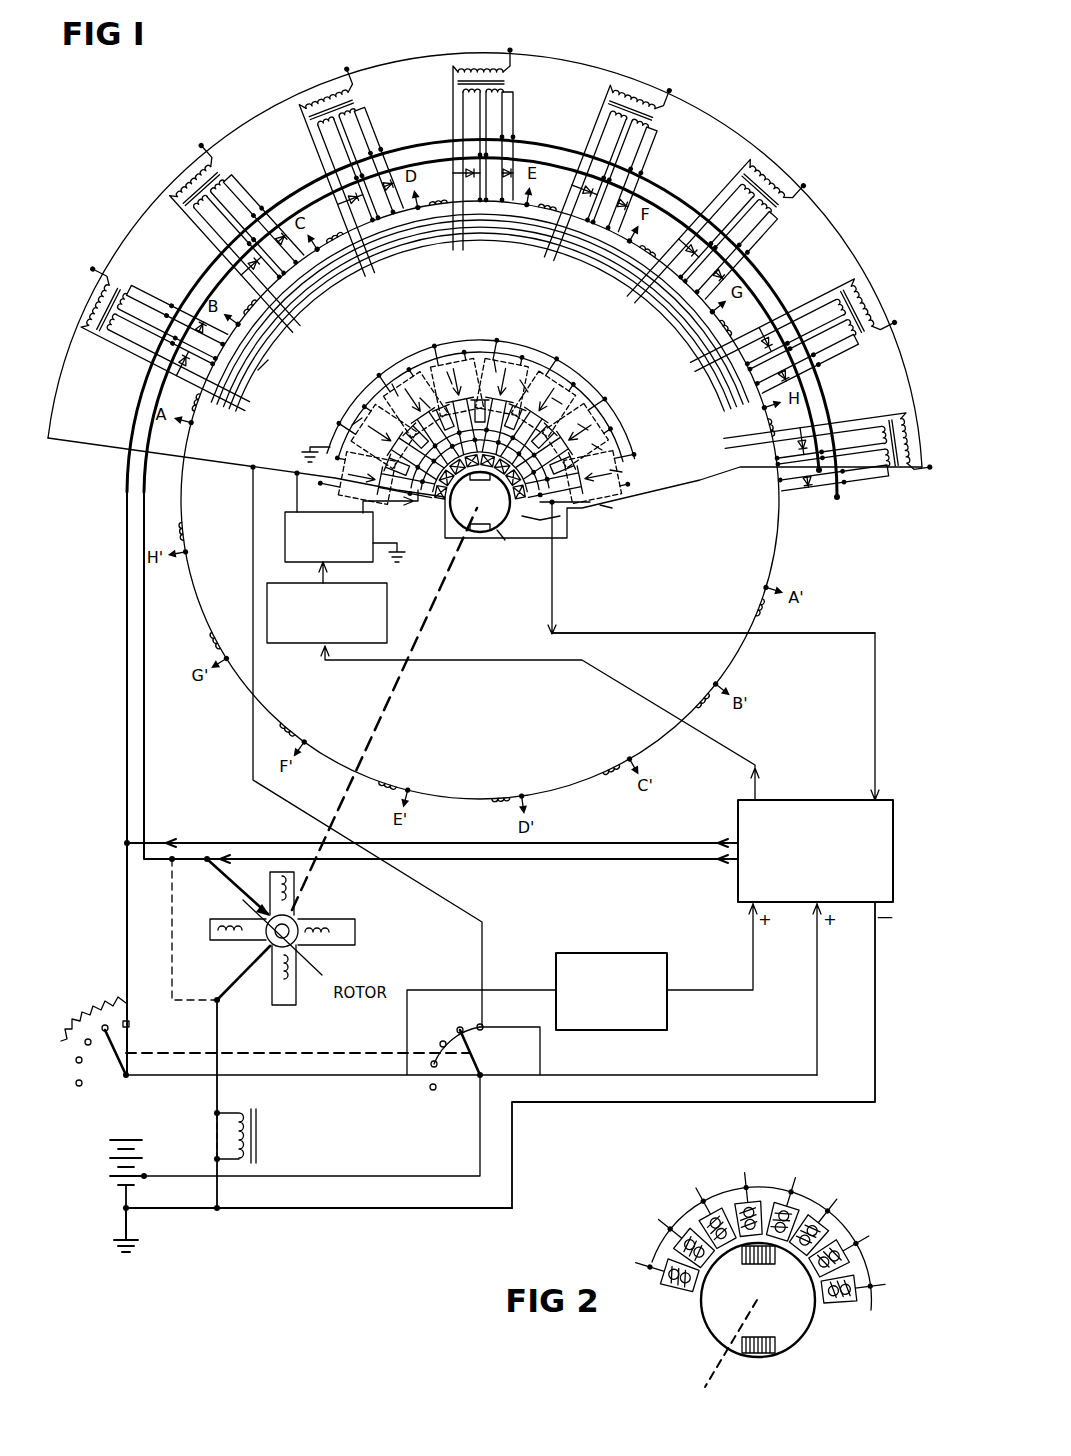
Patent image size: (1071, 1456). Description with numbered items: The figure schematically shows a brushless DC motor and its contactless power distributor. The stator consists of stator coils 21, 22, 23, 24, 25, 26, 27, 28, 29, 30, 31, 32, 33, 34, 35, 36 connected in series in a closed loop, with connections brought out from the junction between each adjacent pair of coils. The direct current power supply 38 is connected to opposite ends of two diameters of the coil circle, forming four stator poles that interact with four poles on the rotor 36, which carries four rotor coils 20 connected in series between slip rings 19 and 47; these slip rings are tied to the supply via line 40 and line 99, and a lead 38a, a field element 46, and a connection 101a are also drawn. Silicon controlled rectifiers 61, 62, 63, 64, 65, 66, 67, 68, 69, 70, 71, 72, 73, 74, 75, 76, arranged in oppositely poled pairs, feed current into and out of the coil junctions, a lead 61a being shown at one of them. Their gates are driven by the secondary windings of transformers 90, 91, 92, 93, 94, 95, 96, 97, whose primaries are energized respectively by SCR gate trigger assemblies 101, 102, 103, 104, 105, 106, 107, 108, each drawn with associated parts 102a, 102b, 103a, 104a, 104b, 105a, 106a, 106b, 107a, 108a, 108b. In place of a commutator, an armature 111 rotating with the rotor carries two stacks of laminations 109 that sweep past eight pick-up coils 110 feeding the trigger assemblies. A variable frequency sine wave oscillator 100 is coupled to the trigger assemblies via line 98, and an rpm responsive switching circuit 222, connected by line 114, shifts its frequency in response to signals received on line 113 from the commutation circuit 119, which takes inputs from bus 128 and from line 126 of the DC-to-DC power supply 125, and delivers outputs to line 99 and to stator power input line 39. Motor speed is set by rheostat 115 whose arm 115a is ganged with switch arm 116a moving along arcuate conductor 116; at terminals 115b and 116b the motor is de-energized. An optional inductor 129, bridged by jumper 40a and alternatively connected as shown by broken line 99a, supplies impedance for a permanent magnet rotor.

In FIG. 1, the slip ring 19 is at (296, 920).
In FIG. 1, the rotor coil 20 is at (335, 927).
In FIG. 1, the stator coil 21 is at (212, 411).
In FIG. 1, the stator coil 22 is at (264, 318).
In FIG. 1, the stator coil 23 is at (345, 252).
In FIG. 1, the stator coil 24 is at (438, 212).
In FIG. 1, the stator coil 25 is at (545, 215).
In FIG. 1, the stator coil 26 is at (642, 260).
In FIG. 1, the stator coil 27 is at (716, 338).
In FIG. 1, the stator coil 28 is at (757, 425).
In FIG. 1, the stator coil 29 is at (745, 599).
In FIG. 1, the stator coil 30 is at (692, 686).
In FIG. 1, the stator coil 31 is at (614, 752).
In FIG. 1, the stator coil 32 is at (503, 781).
In FIG. 1, the stator coil 33 is at (398, 773).
In FIG. 1, the stator coil 34 is at (301, 723).
In FIG. 1, the stator coil 35 is at (223, 626).
In FIG. 1, the rotor 36 is at (282, 763).
In FIG. 1, the direct current power supply 38 is at (108, 1172).
In FIG. 1, the battery lead 38a is at (196, 1078).
In FIG. 1, the stator power input line 39 is at (122, 812).
In FIG. 1, the line 40 is at (220, 1093).
In FIG. 1, the jumper 40a is at (212, 1132).
In FIG. 1, the rotor field winding 46 is at (252, 944).
In FIG. 1, the slip ring 47 is at (305, 958).
In FIG. 1, the silicon controlled rectifier 61 is at (192, 362).
In FIG. 1, the diode lead 61a is at (258, 372).
In FIG. 1, the silicon controlled rectifier 62 is at (207, 338).
In FIG. 1, the silicon controlled rectifier 63 is at (235, 268).
In FIG. 1, the silicon controlled rectifier 64 is at (284, 214).
In FIG. 1, the silicon controlled rectifier 65 is at (332, 188).
In FIG. 1, the silicon controlled rectifier 66 is at (382, 185).
In FIG. 1, the silicon controlled rectifier 67 is at (458, 172).
In FIG. 1, the silicon controlled rectifier 68 is at (502, 170).
In FIG. 1, the silicon controlled rectifier 69 is at (568, 175).
In FIG. 1, the silicon controlled rectifier 70 is at (620, 190).
In FIG. 1, the silicon controlled rectifier 71 is at (688, 240).
In FIG. 1, the silicon controlled rectifier 72 is at (722, 262).
In FIG. 1, the silicon controlled rectifier 73 is at (766, 340).
In FIG. 1, the silicon controlled rectifier 74 is at (790, 375).
In FIG. 1, the silicon controlled rectifier 75 is at (800, 460).
In FIG. 1, the silicon controlled rectifier 76 is at (800, 498).
In FIG. 1, the transformer 90 is at (100, 298).
In FIG. 1, the transformer 91 is at (196, 175).
In FIG. 1, the transformer 92 is at (336, 92).
In FIG. 1, the transformer 93 is at (488, 62).
In FIG. 1, the transformer 94 is at (642, 98).
In FIG. 1, the transformer 95 is at (774, 180).
In FIG. 1, the transformer 96 is at (855, 307).
In FIG. 1, the transformer 97 is at (900, 462).
In FIG. 1, the line 98 is at (400, 496).
In FIG. 1, the line 99 is at (142, 820).
In FIG. 1, the broken line 99a is at (170, 912).
In FIG. 1, the variable frequency sine wave oscillator 100 is at (329, 526).
In FIG. 1, the SCR gate trigger assembly 101 is at (350, 450).
In FIG. 1, the sensor output lead 101a is at (556, 540).
In FIG. 1, the SCR trigger assembly 102 is at (385, 400).
In FIG. 1, the sensor coil 102a is at (360, 415).
In FIG. 1, the sensor coil 102b is at (392, 382).
In FIG. 1, the SCR gate trigger assembly 103 is at (428, 378).
In FIG. 1, the sensor coil 103a is at (420, 396).
In FIG. 1, the SCR gate trigger assembly 104 is at (468, 360).
In FIG. 1, the sensor coil 104a is at (447, 370).
In FIG. 1, the sensor coil 104b is at (494, 358).
In FIG. 1, the SCR gate trigger assembly 105 is at (522, 375).
In FIG. 1, the sensor coil 105a is at (520, 378).
In FIG. 1, the SCR gate trigger assembly 106 is at (563, 400).
In FIG. 1, the sensor coil 106a is at (552, 396).
In FIG. 1, the sensor coil 106b is at (580, 422).
In FIG. 1, the SCR gate trigger assembly 107 is at (598, 445).
In FIG. 1, the sensor coil 107a is at (594, 442).
In FIG. 1, the SCR gate trigger assembly 108 is at (615, 484).
In FIG. 1, the sensor coil 108a is at (612, 470).
In FIG. 1, the sensor coil 108b is at (603, 508).
In FIG. 1, the stack of laminations 109 is at (462, 510).
In FIG. 2, the stack of laminations 109 is at (740, 1258).
In FIG. 1, the pick-up coil 110 is at (512, 516).
In FIG. 2, the pick-up coil 110 is at (828, 1322).
In FIG. 1, the armature 111 is at (497, 534).
In FIG. 2, the armature 111 is at (780, 1352).
In FIG. 1, the line 113 is at (520, 660).
In FIG. 1, the oscillator control lead 114 is at (315, 575).
In FIG. 1, the rheostat 115 is at (94, 1008).
In FIG. 1, the arm 115a is at (120, 1044).
In FIG. 1, the terminal 115b is at (76, 1088).
In FIG. 1, the arcuate conductor 116 is at (468, 1024).
In FIG. 1, the switch arm 116a is at (478, 1060).
In FIG. 1, the terminal 116b is at (438, 1092).
In FIG. 1, the commutation circuit 119 is at (896, 858).
In FIG. 1, the DC-to-DC power supply 125 is at (672, 953).
In FIG. 1, the line 126 is at (752, 960).
In FIG. 1, the bus 128 is at (596, 633).
In FIG. 1, the inductor 129 is at (260, 1130).
In FIG. 1, the rpm responsive switching circuit 222 is at (392, 620).